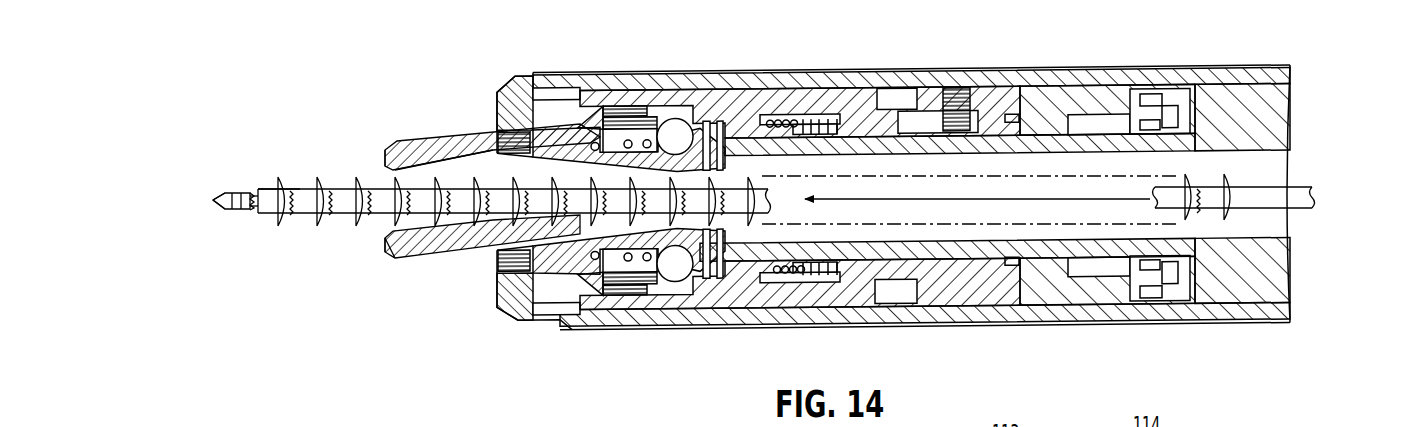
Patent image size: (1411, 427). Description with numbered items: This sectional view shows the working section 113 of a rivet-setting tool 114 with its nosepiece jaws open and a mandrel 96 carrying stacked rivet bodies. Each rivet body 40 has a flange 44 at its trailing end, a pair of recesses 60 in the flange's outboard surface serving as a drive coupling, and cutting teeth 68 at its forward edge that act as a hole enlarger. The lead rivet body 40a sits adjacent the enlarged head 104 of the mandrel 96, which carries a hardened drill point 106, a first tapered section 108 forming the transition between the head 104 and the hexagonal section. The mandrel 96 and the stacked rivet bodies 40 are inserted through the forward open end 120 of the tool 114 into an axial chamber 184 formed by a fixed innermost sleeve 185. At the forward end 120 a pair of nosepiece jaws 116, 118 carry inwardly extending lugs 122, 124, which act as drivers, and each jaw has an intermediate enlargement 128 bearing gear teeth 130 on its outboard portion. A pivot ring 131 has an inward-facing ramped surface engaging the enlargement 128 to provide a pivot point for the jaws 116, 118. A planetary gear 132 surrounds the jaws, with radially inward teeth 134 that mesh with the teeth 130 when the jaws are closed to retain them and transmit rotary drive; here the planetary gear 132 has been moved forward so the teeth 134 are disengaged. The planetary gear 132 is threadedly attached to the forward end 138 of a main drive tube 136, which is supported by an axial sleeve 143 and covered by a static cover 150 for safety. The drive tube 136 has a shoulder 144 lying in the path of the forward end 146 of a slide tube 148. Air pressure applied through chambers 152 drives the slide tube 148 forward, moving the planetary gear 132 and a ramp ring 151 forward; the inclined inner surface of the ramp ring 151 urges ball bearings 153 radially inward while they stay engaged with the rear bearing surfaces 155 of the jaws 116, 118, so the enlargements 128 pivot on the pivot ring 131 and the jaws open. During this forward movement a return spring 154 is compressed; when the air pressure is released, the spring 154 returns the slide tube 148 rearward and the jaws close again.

The rivet body 40 is at (786, 169).
The lead rivet body 40a is at (267, 172).
The flange 44 is at (286, 176).
The recesses 60 is at (290, 216).
The cutting teeth 68 is at (257, 190).
The mandrel 96 is at (1320, 198).
The enlarged head 104 is at (228, 196).
The hardened drill point 106 is at (214, 204).
The first tapered section 108 is at (246, 210).
The working section 113 is at (1003, 62).
The tool 114 is at (515, 340).
The nosepiece jaw 116 is at (437, 262).
The nosepiece jaw 118 is at (412, 150).
The forward end 120 is at (382, 265).
The lug 122 is at (385, 252).
The lug 124 is at (397, 170).
The enlargement 128 is at (514, 260).
The gear teeth 130 is at (556, 309).
The pivot ring 131 is at (617, 201).
The planetary gear 132 is at (534, 201).
The teeth 134 is at (514, 142).
The main drive tube 136 is at (800, 197).
The forward end 138 is at (556, 94).
The axial sleeve 143 is at (1242, 193).
The shoulder 144 is at (595, 255).
The forward end 146 is at (675, 263).
The slide tube 148 is at (911, 197).
The static cover 150 is at (956, 109).
The ramp ring 151 is at (713, 145).
The chambers 152 is at (1091, 197).
The ball bearings 153 is at (713, 253).
The return spring 154 is at (802, 197).
The rear bearing surfaces 155 is at (675, 136).
The axial chamber 184 is at (973, 243).
The fixed innermost sleeve 185 is at (1046, 243).